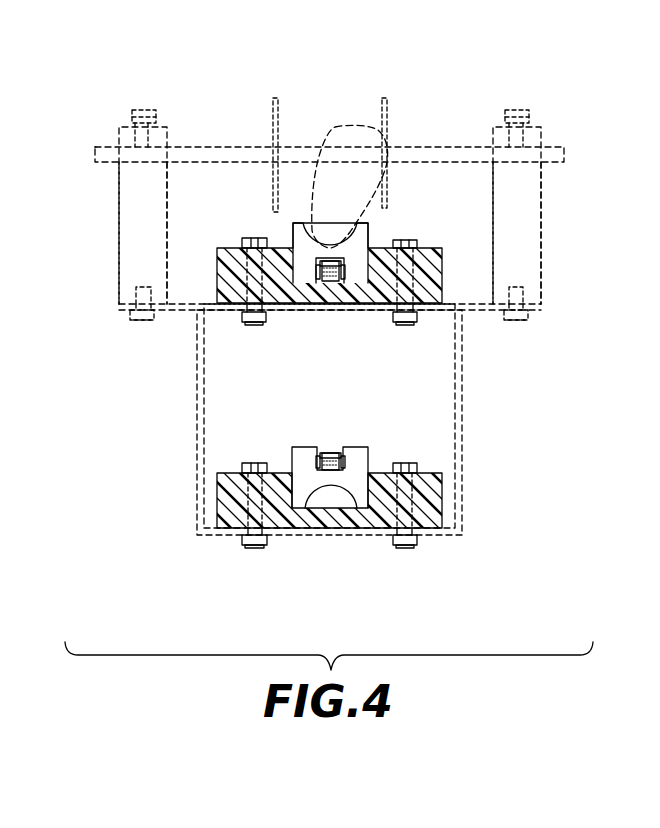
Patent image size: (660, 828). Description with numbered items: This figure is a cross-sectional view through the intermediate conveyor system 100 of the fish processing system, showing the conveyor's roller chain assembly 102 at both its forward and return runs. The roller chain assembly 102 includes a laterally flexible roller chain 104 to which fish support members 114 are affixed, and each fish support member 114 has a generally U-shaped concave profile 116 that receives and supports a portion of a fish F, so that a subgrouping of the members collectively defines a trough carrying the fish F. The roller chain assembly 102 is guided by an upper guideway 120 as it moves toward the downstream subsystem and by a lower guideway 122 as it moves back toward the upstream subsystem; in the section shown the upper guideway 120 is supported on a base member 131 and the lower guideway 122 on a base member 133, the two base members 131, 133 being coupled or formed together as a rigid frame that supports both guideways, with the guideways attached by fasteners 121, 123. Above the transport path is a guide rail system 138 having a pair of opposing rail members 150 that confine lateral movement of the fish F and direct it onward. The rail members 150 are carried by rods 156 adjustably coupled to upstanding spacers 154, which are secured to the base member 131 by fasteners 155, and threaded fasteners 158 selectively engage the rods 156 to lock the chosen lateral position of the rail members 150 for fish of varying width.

The intermediate conveyor system 100 is at (160, 76).
The roller chain assembly 102 is at (385, 230).
The roller chain 104 is at (330, 280).
The fish support member 114 is at (303, 247).
The concave profile 116 is at (318, 233).
The upper guideway 120 is at (424, 257).
The fasteners 121 is at (255, 323).
The lower guideway 122 is at (443, 495).
The fasteners 123 is at (253, 548).
The base member 131 is at (182, 311).
The base member 133 is at (197, 437).
The guide rail system 138 is at (67, 128).
The rail members 150 is at (273, 114).
The spacers 154 is at (122, 212).
The fasteners 155 is at (141, 322).
The rods 156 is at (183, 147).
The threaded fasteners 158 is at (143, 109).
The fish F is at (333, 127).